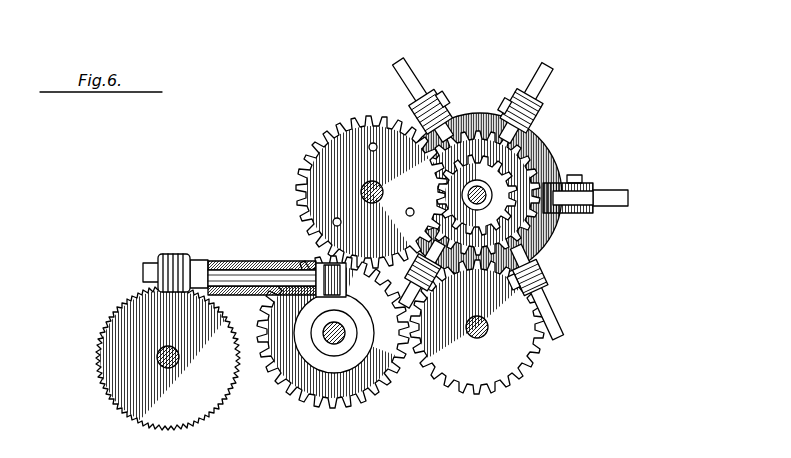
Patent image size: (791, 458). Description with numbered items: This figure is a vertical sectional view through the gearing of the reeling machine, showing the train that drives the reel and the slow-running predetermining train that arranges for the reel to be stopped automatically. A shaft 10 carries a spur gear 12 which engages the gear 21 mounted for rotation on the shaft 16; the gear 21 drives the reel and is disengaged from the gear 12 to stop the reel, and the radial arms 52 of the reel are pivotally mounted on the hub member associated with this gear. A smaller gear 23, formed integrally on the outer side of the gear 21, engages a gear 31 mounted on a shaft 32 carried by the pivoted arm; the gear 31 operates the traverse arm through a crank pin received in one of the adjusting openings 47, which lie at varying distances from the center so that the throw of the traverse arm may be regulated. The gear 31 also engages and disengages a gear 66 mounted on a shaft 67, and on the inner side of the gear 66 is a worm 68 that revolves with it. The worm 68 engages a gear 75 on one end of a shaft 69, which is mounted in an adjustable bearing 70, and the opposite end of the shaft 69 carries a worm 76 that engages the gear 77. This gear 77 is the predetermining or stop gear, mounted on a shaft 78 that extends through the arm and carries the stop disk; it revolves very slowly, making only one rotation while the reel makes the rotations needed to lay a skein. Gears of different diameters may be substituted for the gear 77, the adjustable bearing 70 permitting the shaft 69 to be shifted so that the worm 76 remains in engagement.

The gear 31 is at (342, 134).
The shaft 32 is at (375, 207).
The adjusting openings 47 is at (337, 218).
The shaft 16 is at (478, 178).
The gear 23 is at (527, 180).
The gear 21 is at (556, 232).
The radial arms 52 is at (548, 84).
The spur gear 12 is at (522, 368).
The shaft 10 is at (489, 330).
The gear 66 is at (352, 388).
The shaft 67 is at (329, 336).
The worm 68 is at (325, 366).
The bearing 70 is at (230, 261).
The shaft 69 is at (256, 270).
The worm 76 is at (164, 254).
The gear 75 is at (326, 268).
The gear 77 is at (164, 424).
The shaft 78 is at (160, 364).